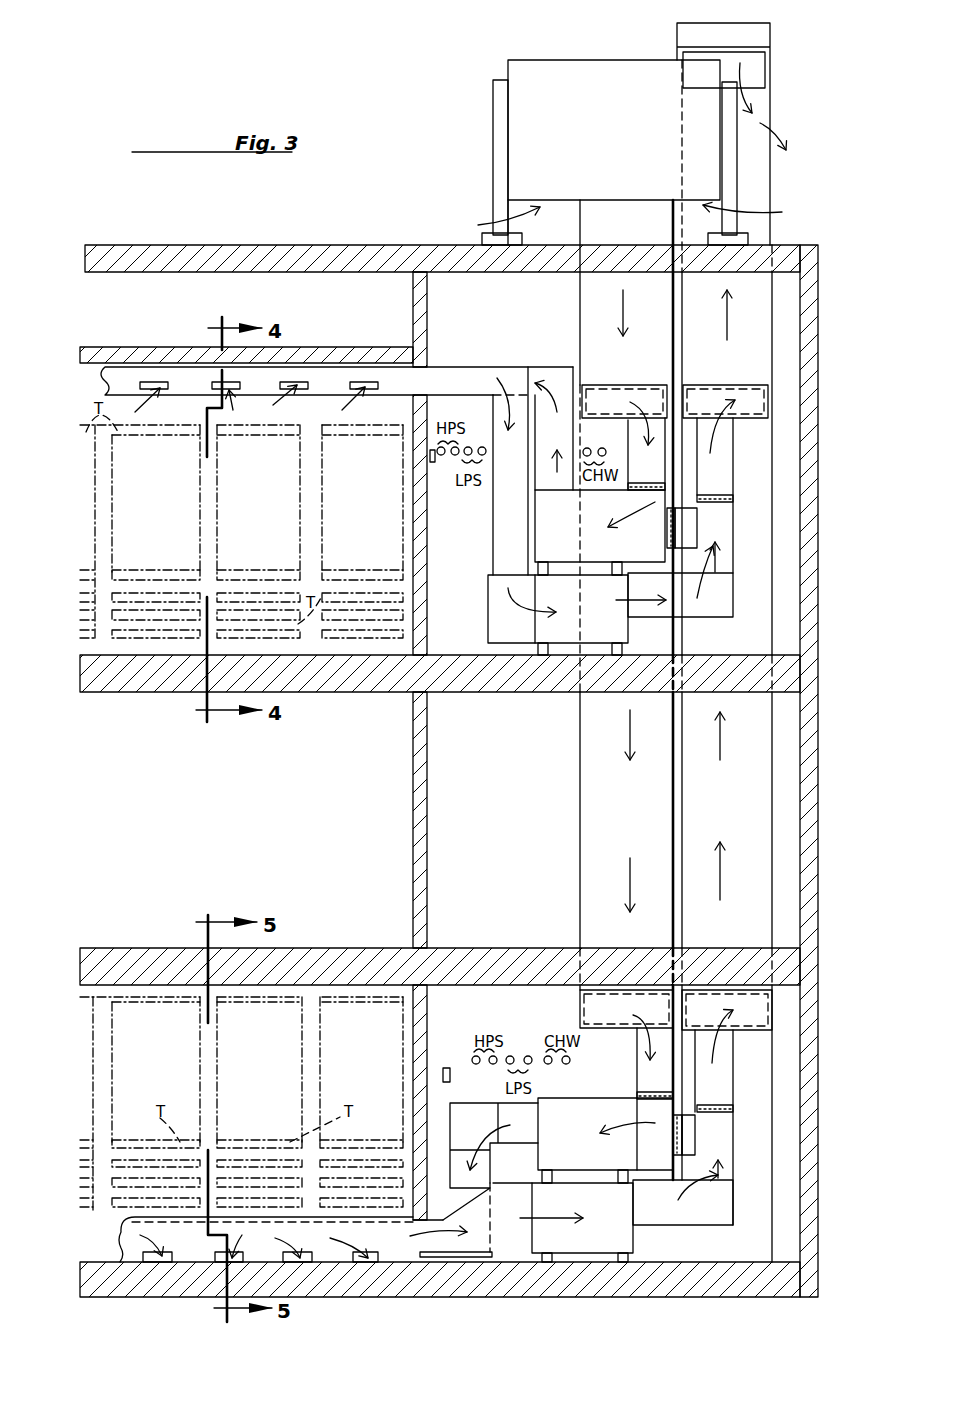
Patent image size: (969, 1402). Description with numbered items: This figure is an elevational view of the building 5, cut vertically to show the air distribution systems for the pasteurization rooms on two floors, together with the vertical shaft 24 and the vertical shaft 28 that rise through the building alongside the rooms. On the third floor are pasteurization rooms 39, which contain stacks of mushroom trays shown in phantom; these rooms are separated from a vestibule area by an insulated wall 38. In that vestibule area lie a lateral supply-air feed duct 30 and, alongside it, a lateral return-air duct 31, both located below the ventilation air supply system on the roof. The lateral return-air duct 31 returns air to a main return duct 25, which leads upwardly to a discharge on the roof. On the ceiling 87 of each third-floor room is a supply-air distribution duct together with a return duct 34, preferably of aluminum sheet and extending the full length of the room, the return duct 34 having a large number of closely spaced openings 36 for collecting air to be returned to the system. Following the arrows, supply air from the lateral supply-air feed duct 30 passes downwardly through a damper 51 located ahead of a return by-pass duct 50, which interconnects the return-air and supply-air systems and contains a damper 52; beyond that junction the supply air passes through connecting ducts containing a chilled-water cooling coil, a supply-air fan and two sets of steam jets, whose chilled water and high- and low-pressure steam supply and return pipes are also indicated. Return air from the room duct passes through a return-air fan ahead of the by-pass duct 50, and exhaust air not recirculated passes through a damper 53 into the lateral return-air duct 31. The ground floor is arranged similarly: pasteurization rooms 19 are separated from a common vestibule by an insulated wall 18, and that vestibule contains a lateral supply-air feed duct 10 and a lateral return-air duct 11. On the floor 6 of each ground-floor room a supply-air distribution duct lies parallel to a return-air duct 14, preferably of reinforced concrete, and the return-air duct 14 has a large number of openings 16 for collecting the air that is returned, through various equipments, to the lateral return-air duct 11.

The building 5 is at (823, 467).
The floor 6 is at (478, 1270).
The lateral supply-air feed duct 10 is at (593, 1010).
The lateral return-air duct 11 is at (753, 1012).
The return-air duct 14 is at (122, 1247).
The openings 16 is at (372, 1262).
The insulated wall 18 is at (425, 1033).
The pasteurization rooms 19 is at (310, 1000).
The supply air shaft 24 is at (590, 786).
The main return duct 25 is at (757, 178).
The exhaust outlet 28 is at (760, 63).
The lateral supply-air feed duct 30 is at (605, 397).
The lateral return-air duct 31 is at (752, 402).
The return duct 34 is at (186, 378).
The openings 36 is at (350, 392).
The insulated wall 38 is at (430, 558).
The pasteurization rooms 39 is at (312, 648).
The return by-pass duct 50 is at (690, 520).
The damper 51 is at (632, 486).
The damper 52 is at (668, 526).
The damper 53 is at (725, 494).
The ceiling 87 is at (112, 350).